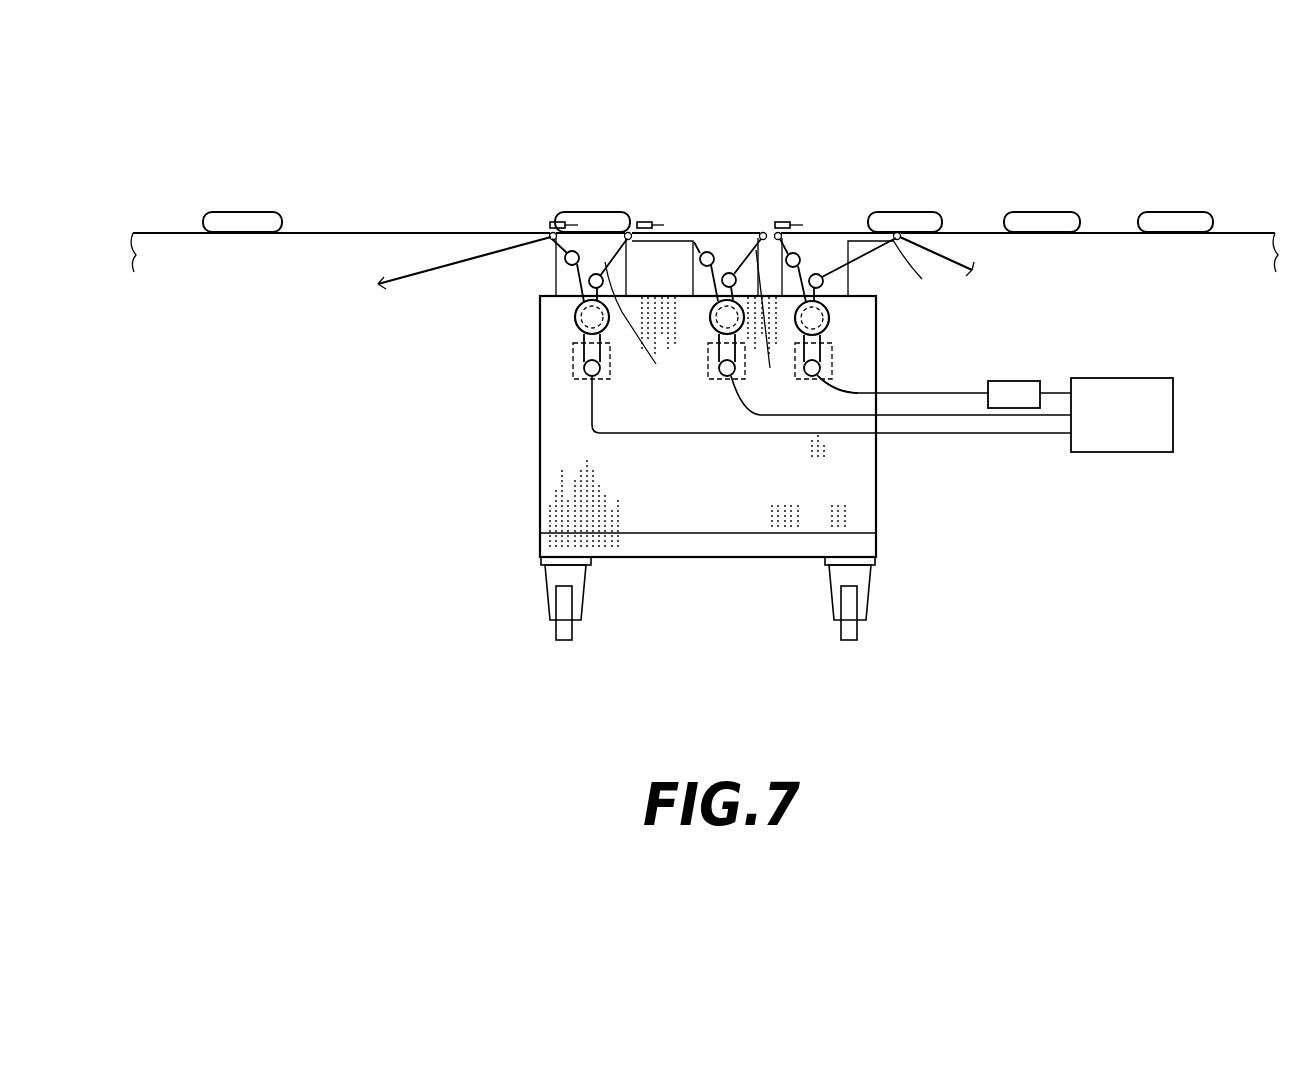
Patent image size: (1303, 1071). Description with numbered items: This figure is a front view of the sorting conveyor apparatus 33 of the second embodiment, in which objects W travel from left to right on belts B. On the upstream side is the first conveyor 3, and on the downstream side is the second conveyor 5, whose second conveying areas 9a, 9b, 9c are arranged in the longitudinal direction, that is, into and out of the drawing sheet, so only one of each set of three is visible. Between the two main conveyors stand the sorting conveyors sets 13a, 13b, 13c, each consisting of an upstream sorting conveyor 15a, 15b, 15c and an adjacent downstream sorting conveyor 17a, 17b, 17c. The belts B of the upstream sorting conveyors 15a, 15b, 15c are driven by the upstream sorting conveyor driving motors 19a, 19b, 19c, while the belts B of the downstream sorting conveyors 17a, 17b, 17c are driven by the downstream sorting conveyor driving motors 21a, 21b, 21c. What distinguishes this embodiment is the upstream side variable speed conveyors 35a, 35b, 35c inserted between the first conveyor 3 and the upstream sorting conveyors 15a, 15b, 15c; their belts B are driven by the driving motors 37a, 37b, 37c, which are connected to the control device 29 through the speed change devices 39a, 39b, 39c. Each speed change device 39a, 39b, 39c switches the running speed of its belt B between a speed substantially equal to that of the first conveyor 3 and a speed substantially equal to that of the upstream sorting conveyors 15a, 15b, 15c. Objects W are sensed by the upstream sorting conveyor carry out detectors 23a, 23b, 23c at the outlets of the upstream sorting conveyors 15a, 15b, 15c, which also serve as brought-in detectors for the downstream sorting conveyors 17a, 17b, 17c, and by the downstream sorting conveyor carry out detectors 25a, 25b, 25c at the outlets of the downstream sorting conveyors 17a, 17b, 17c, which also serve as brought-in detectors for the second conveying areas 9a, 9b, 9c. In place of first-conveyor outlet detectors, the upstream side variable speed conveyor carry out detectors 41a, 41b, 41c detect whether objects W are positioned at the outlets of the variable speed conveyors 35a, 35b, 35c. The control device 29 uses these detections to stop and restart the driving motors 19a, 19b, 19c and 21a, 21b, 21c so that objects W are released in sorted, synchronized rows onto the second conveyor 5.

The first conveyor 3 is at (1152, 140).
The second conveyor 5 is at (270, 177).
The second conveying area 9a is at (357, 165).
The second conveying area 9b is at (357, 165).
The second conveying area 9c is at (330, 226).
The sorting conveyors set 13a is at (747, 193).
The sorting conveyors set 13b is at (747, 193).
The sorting conveyors set 13c is at (717, 112).
The upstream sorting conveyor 15a is at (855, 219).
The upstream sorting conveyor 15b is at (855, 219).
The upstream sorting conveyor 15c is at (745, 228).
The downstream sorting conveyor 17a is at (600, 216).
The downstream sorting conveyor 17b is at (600, 216).
The downstream sorting conveyor 17c is at (606, 226).
The upstream sorting conveyor driving motor 19a is at (831, 440).
The upstream sorting conveyor driving motor 19b is at (831, 440).
The upstream sorting conveyor driving motor 19c is at (723, 377).
The downstream sorting conveyor driving motor 21a is at (562, 380).
The downstream sorting conveyor driving motor 21b is at (562, 380).
The downstream sorting conveyor driving motor 21c is at (585, 367).
The upstream sorting conveyor carry out detector 23a is at (673, 170).
The upstream sorting conveyor carry out detector 23b is at (673, 170).
The upstream sorting conveyor carry out detector 23c is at (642, 222).
The downstream sorting conveyor carry out detector 25a is at (464, 184).
The downstream sorting conveyor carry out detector 25b is at (464, 184).
The downstream sorting conveyor carry out detector 25c is at (552, 222).
The control device 29 is at (1138, 437).
The sorting conveyor apparatus 33 is at (878, 63).
The upstream side variable speed conveyor 35a is at (986, 216).
The upstream side variable speed conveyor 35b is at (986, 216).
The upstream side variable speed conveyor 35c is at (850, 226).
The driving motor for upstream side variable speed conveyor 37a is at (951, 364).
The driving motor for upstream side variable speed conveyor 37b is at (951, 364).
The driving motor for upstream side variable speed conveyor 37c is at (822, 369).
The speed change device 39a is at (1020, 466).
The speed change device 39b is at (1020, 466).
The speed change device 39c is at (1015, 397).
The upstream side variable speed conveyor carry out detector 41a is at (920, 171).
The upstream side variable speed conveyor carry out detector 41b is at (920, 171).
The upstream side variable speed conveyor carry out detector 41c is at (792, 222).
The object to be conveyed W is at (228, 211).
The belt B is at (775, 319).